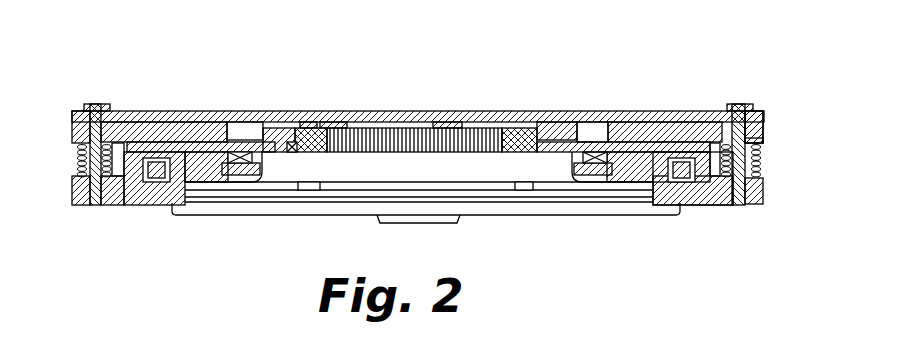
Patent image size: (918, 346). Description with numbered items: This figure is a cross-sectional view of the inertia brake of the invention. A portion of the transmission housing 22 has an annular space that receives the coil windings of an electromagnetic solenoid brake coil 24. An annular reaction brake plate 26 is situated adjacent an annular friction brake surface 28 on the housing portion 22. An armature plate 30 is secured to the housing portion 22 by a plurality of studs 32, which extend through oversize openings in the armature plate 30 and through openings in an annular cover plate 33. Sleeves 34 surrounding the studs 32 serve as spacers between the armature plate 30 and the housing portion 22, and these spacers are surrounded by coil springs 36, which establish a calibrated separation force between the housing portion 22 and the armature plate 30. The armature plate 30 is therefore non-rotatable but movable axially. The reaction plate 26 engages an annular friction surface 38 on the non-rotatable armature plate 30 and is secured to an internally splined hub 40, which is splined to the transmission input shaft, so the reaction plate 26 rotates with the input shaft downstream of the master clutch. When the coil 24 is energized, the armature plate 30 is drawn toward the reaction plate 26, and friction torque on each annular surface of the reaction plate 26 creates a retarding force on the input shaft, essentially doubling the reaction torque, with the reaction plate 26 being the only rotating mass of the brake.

The transmission housing portion 22 is at (720, 188).
The electromagnetic solenoid brake coil 24 is at (157, 170).
The annular reaction brake plate 26 is at (624, 148).
The annular friction brake surface 28 is at (196, 150).
The armature plate 30 is at (764, 116).
The studs 32 is at (763, 190).
The annular cover plate 33 is at (756, 108).
The sleeves 34 is at (763, 140).
The coil springs 36 is at (761, 158).
The annular friction surface 38 is at (665, 150).
The internally splined hub 40 is at (523, 138).